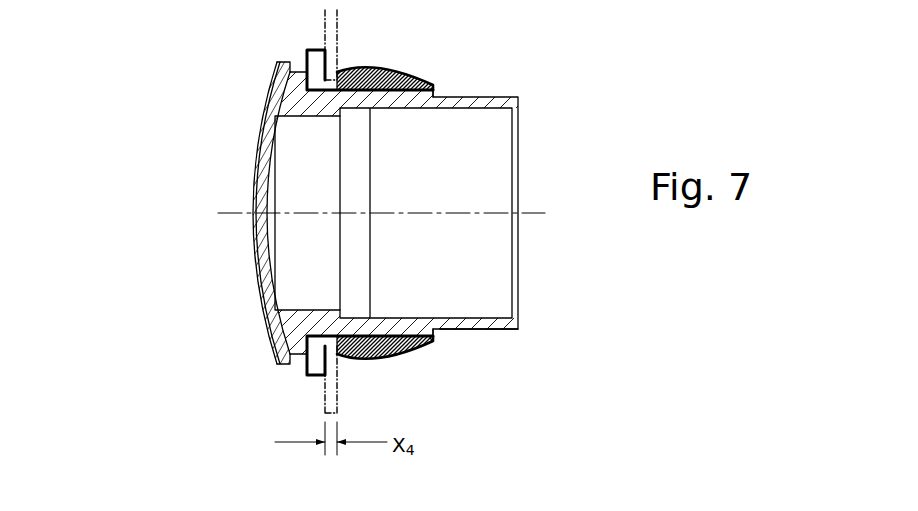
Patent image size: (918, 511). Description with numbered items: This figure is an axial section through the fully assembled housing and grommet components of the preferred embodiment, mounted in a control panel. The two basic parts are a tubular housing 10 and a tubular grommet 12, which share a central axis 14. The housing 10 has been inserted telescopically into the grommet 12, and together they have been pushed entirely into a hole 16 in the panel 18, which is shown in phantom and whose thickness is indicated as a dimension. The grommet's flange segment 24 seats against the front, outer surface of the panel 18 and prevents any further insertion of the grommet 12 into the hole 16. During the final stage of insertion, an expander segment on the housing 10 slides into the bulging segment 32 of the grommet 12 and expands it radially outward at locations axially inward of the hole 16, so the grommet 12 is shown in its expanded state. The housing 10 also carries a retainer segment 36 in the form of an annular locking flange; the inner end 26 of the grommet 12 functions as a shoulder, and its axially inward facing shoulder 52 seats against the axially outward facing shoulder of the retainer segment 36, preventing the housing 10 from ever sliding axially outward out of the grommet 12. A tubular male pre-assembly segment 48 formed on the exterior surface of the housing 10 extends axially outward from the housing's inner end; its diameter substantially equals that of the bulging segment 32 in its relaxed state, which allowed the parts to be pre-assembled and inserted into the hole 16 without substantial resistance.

The tubular housing 10 is at (257, 115).
The tubular grommet 12 is at (381, 354).
The central axis 14 is at (228, 213).
The hole 16 is at (318, 376).
The control panel 18 is at (339, 25).
The flange segment of the grommet 24 is at (310, 53).
The inner end of the grommet 26 is at (431, 339).
The bulging segment 32 is at (431, 83).
The retainer segment 36 is at (439, 333).
The male pre-assembly segment 48 is at (495, 332).
The axially inward facing shoulder of the grommet 52 is at (436, 93).